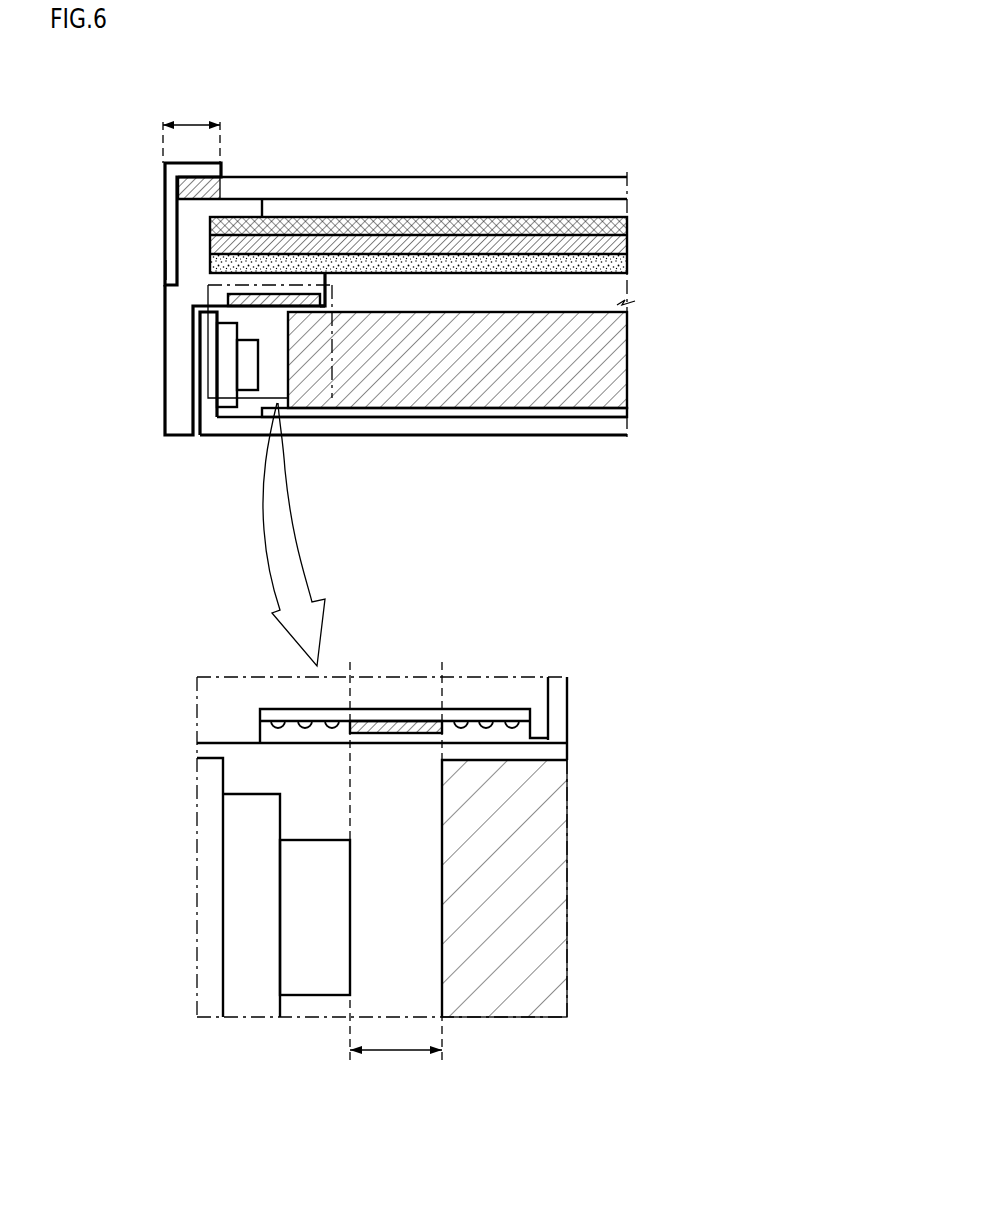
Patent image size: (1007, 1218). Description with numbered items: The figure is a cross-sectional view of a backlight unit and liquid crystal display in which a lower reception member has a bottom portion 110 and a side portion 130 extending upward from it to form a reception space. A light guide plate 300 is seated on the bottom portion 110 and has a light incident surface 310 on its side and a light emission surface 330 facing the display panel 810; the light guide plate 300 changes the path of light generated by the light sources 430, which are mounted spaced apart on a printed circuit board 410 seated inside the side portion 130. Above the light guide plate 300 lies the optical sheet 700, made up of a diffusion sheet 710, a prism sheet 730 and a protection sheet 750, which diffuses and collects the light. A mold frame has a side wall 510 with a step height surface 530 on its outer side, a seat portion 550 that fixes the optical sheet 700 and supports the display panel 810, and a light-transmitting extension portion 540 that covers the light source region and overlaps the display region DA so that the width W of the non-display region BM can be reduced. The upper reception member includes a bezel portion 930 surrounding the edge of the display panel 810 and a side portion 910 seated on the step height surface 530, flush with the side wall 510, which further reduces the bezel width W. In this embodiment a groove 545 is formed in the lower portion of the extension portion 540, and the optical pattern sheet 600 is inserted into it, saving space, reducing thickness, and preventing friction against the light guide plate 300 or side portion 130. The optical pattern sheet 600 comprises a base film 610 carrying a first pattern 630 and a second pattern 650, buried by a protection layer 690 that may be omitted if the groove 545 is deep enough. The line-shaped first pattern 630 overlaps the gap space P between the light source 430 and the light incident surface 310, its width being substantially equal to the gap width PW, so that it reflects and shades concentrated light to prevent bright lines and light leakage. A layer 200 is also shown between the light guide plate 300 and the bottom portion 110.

The bottom portion 110 is at (440, 432).
The side portion 130 is at (205, 362).
The display panel layer 200 is at (618, 415).
The light guide plate 300 is at (618, 358).
The light incident surface 310 is at (442, 957).
The light emission surface 330 is at (518, 312).
The printed circuit board 410 is at (225, 378).
The light source 430 is at (250, 386).
The side wall 510 is at (173, 422).
The step height surface 530 is at (165, 257).
The extension portion 540 is at (230, 280).
The groove 545 is at (398, 709).
The seat portion 550 is at (232, 209).
The optical pattern sheet 600 is at (267, 304).
The base film 610 is at (513, 710).
The first pattern 630 is at (418, 732).
The second pattern 650 is at (530, 723).
The protection layer 690 is at (540, 738).
The optical sheet 700 is at (732, 225).
The diffusion sheet 710 is at (620, 264).
The prism sheet 730 is at (620, 244).
The protection sheet 750 is at (620, 226).
The display panel 810 is at (582, 164).
The side portion 910 is at (172, 186).
The bezel portion 930 is at (193, 167).
The bezel width W is at (191, 105).
The non-display region BM is at (207, 183).
The display region DA is at (405, 187).
The gap space P is at (418, 917).
The width of the gap space PW is at (396, 1073).